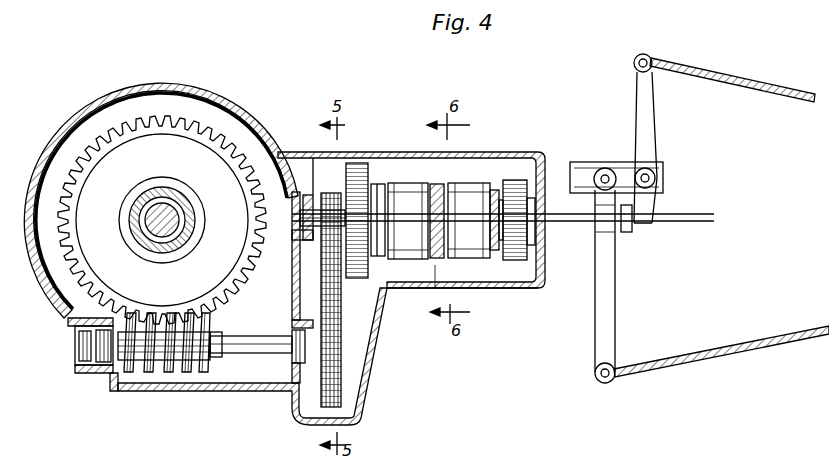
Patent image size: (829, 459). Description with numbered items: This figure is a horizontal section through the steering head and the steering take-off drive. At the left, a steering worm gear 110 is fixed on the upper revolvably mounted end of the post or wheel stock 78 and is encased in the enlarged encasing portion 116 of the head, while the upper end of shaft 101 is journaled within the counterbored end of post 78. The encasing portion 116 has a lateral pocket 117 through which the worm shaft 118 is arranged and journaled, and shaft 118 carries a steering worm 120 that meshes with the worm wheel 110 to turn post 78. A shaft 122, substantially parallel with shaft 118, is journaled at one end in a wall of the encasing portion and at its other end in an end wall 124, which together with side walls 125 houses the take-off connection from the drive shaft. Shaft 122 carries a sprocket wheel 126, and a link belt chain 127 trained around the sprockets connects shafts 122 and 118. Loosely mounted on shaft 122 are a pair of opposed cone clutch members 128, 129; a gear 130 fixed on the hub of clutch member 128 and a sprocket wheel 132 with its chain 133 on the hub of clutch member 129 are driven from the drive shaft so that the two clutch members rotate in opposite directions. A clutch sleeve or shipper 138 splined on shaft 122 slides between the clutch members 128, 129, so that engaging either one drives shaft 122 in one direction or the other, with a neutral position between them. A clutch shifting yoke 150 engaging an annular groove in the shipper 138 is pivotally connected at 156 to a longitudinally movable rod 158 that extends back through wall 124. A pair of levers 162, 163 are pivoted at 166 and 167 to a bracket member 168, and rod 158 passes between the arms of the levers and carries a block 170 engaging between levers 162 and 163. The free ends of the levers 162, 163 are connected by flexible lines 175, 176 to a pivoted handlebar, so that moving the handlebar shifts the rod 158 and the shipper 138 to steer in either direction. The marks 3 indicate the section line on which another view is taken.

The section line 3- 3 is at (24, 222).
The post or wheel stock 78 is at (133, 211).
The shaft 101 is at (151, 236).
The steering worm gear 110 is at (70, 272).
The encasing portion 116 is at (44, 157).
The lateral pocket 117 is at (192, 391).
The worm shaft 118 is at (249, 356).
The steering worm 120 is at (131, 380).
The shaft 122 is at (300, 216).
The end wall 124 is at (523, 290).
The side walls 125 is at (477, 158).
The sprocket wheel 126 is at (294, 258).
The link belt chain 127 is at (321, 323).
The cone clutch member 128 is at (374, 190).
The cone clutch member 129 is at (497, 186).
The gear 130 is at (355, 165).
The sprocket wheel 132 is at (540, 184).
The chain 133 is at (520, 180).
The clutch sleeve or shipper 138 is at (413, 192).
The clutch shifting yoke 150 is at (436, 280).
The pivotal connection 156 is at (434, 232).
The longitudinally movable rod 158 is at (492, 246).
The lever 162 is at (595, 336).
The lever 163 is at (650, 130).
The pivot 166 is at (612, 156).
The pivot 167 is at (658, 176).
The bracket member 168 is at (664, 189).
The block 170 is at (630, 232).
The flexible line 175 is at (687, 364).
The flexible line 176 is at (760, 92).